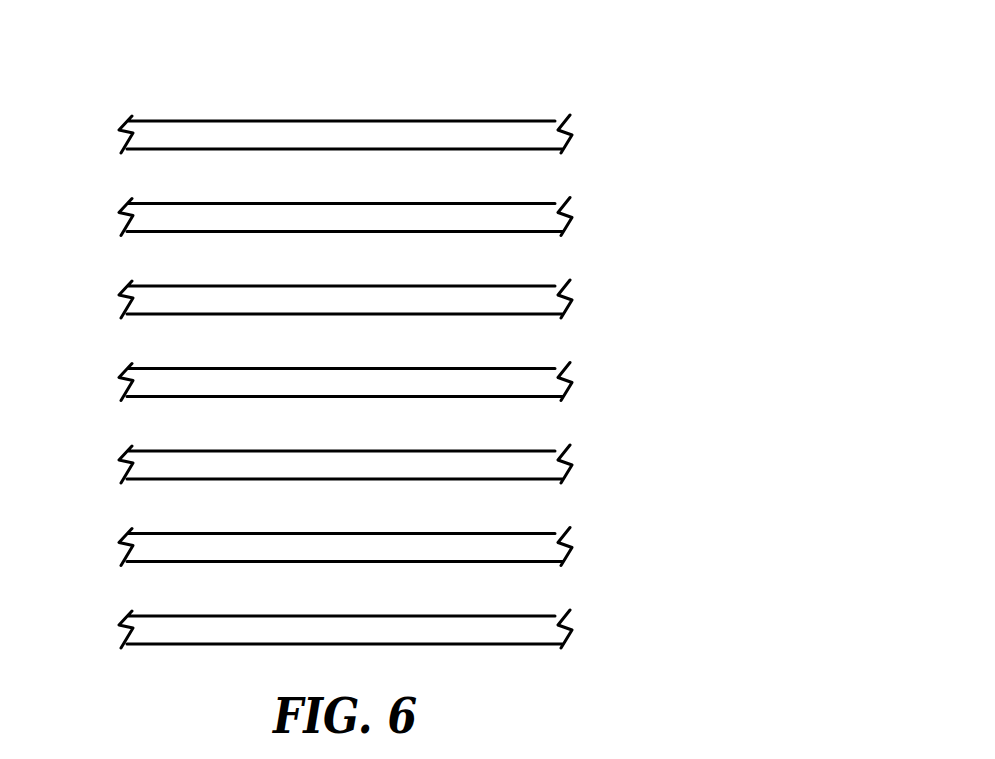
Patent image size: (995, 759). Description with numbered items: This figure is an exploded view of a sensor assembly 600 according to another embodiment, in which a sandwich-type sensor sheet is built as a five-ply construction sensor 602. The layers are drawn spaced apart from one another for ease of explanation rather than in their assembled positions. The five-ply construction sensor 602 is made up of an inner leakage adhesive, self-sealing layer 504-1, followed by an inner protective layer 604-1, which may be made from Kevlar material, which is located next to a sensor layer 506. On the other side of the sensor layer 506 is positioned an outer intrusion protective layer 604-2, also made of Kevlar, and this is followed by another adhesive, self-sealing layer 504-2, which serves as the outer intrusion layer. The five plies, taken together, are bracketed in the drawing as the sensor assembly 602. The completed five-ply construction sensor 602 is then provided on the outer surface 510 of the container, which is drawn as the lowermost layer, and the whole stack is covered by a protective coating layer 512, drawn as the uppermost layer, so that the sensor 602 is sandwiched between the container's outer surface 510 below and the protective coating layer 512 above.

The layered structure 600 is at (495, 92).
The protective coating layer 512 is at (573, 137).
The 5-ply construction sensor 602 is at (117, 175).
The adhesive, self-sealing layer 504-2 is at (573, 220).
The outer (intrusion) protective layer 604-2 is at (573, 302).
The sensor layer 506 is at (573, 384).
The inner protective layer 604-1 is at (573, 467).
The adhesive, self-sealing layer 504-1 is at (573, 550).
The outer surface 510 is at (573, 632).